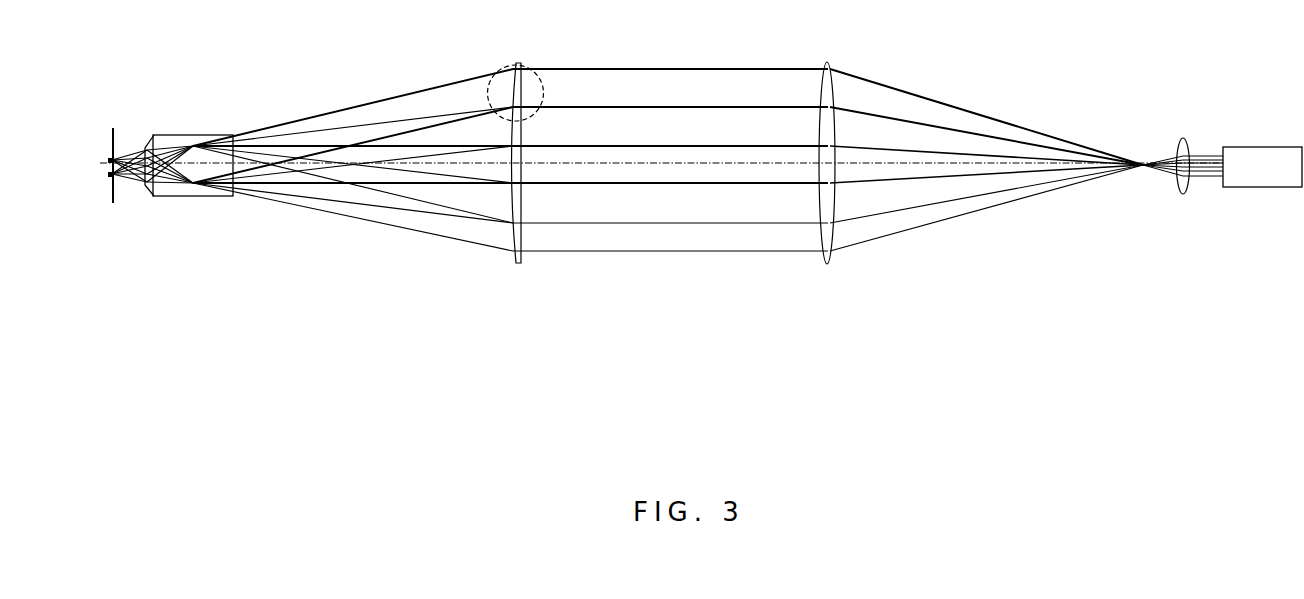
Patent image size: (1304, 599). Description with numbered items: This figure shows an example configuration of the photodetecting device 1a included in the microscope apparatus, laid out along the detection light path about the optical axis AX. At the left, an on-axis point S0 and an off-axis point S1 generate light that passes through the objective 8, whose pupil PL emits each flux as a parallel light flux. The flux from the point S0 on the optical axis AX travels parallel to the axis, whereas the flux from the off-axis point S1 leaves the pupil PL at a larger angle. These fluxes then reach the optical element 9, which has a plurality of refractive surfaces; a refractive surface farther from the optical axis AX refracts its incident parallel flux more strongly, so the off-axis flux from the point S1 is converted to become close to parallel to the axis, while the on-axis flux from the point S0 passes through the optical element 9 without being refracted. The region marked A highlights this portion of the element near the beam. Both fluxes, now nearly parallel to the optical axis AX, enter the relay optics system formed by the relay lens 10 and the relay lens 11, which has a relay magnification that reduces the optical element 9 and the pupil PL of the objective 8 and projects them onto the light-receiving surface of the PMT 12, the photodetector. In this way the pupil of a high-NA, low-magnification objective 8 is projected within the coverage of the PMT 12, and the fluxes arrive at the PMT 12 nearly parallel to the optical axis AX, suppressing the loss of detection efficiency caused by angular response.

The photodetecting device 1a is at (1219, 62).
The objective 8 is at (234, 120).
The optical element 9 is at (519, 64).
The relay lens 10 is at (827, 63).
The relay lens 11 is at (1183, 138).
The PMT 12 is at (1240, 147).
The point on the optical axis S0 is at (108, 157).
The off-axis point S1 is at (108, 178).
The pupil PL is at (193, 204).
The region A is at (487, 80).
The optical axis AX is at (663, 163).